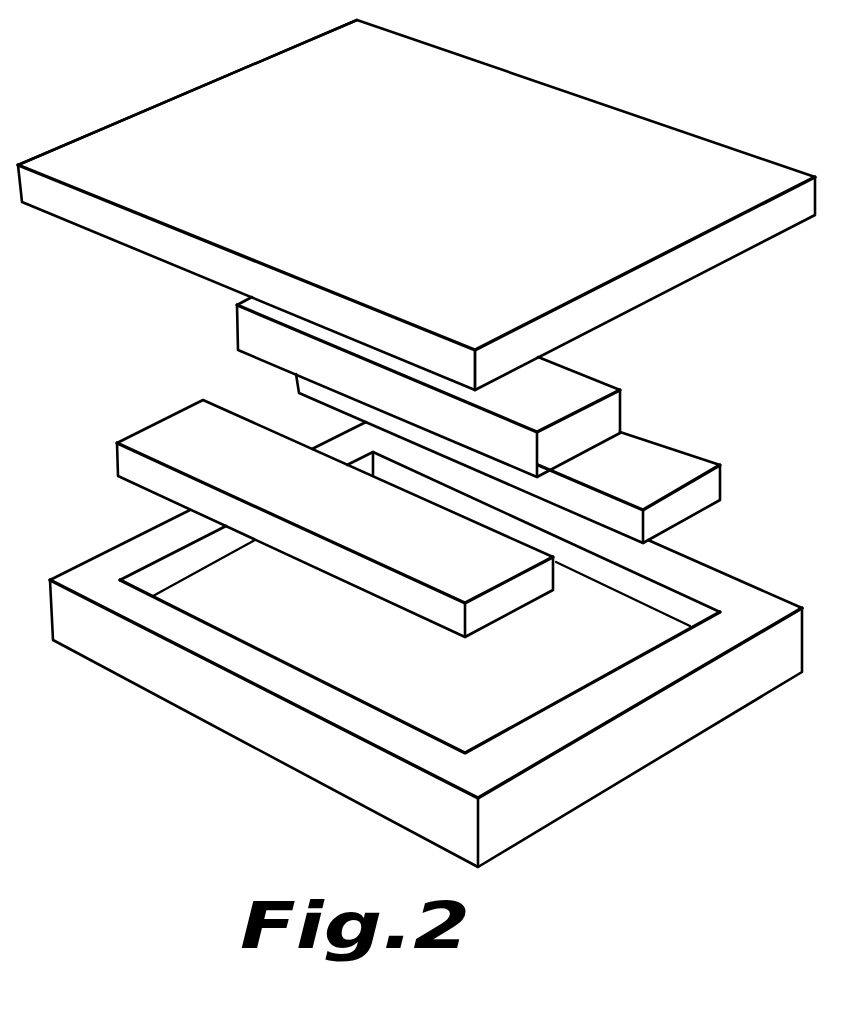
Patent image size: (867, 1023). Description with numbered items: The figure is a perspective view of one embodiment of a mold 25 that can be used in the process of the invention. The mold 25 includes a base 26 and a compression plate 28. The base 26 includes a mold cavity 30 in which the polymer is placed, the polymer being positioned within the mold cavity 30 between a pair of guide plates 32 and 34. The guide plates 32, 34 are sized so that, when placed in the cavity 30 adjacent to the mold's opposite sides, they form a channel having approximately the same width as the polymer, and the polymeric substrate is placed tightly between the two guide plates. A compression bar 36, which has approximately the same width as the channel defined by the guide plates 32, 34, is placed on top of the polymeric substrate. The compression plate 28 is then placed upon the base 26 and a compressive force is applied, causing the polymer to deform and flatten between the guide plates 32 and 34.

The mold 25 is at (76, 112).
The base 26 is at (618, 760).
The compression plate 28 is at (426, 198).
The mold cavity 30 is at (661, 622).
The guide plate 32 is at (685, 463).
The guide plate 34 is at (368, 528).
The compression bar 36 is at (580, 386).